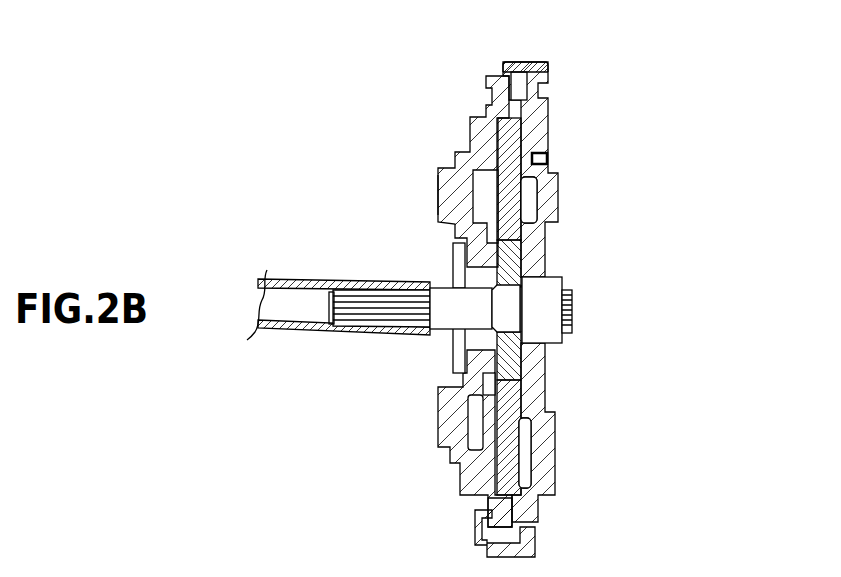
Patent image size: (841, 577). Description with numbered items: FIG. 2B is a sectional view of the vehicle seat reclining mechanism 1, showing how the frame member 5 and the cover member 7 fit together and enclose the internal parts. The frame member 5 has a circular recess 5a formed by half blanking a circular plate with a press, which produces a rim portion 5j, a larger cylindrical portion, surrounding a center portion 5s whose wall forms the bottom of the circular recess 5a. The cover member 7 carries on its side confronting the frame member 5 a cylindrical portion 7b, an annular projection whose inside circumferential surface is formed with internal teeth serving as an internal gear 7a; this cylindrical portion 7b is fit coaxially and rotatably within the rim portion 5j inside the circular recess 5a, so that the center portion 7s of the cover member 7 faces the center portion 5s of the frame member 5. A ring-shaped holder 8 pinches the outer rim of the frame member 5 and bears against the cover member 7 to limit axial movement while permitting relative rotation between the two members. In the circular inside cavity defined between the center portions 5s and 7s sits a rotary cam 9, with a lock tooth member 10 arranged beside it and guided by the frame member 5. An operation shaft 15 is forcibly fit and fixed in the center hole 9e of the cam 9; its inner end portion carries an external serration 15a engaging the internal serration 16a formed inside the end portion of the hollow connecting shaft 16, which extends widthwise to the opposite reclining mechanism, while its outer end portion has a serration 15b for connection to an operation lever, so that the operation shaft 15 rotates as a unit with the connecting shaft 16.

The vehicle seat reclining mechanism 1 is at (669, 97).
The frame member 5 is at (532, 112).
The circular recess 5a is at (508, 401).
The center portion 5s is at (542, 168).
The rim portion 5j is at (515, 537).
The cover member 7 is at (478, 133).
The internal gear 7a is at (517, 128).
The cylindrical portion 7b is at (503, 510).
The center portion 7s is at (455, 193).
The holder 8 is at (525, 62).
The cam 9 is at (508, 358).
The center hole 9e is at (513, 300).
The lock tooth member 10 is at (512, 207).
The operation shaft 15 is at (441, 322).
The external serration 15a is at (381, 320).
The serration 15b is at (563, 282).
The connecting shaft 16 is at (305, 283).
The internal serration 16a is at (337, 312).